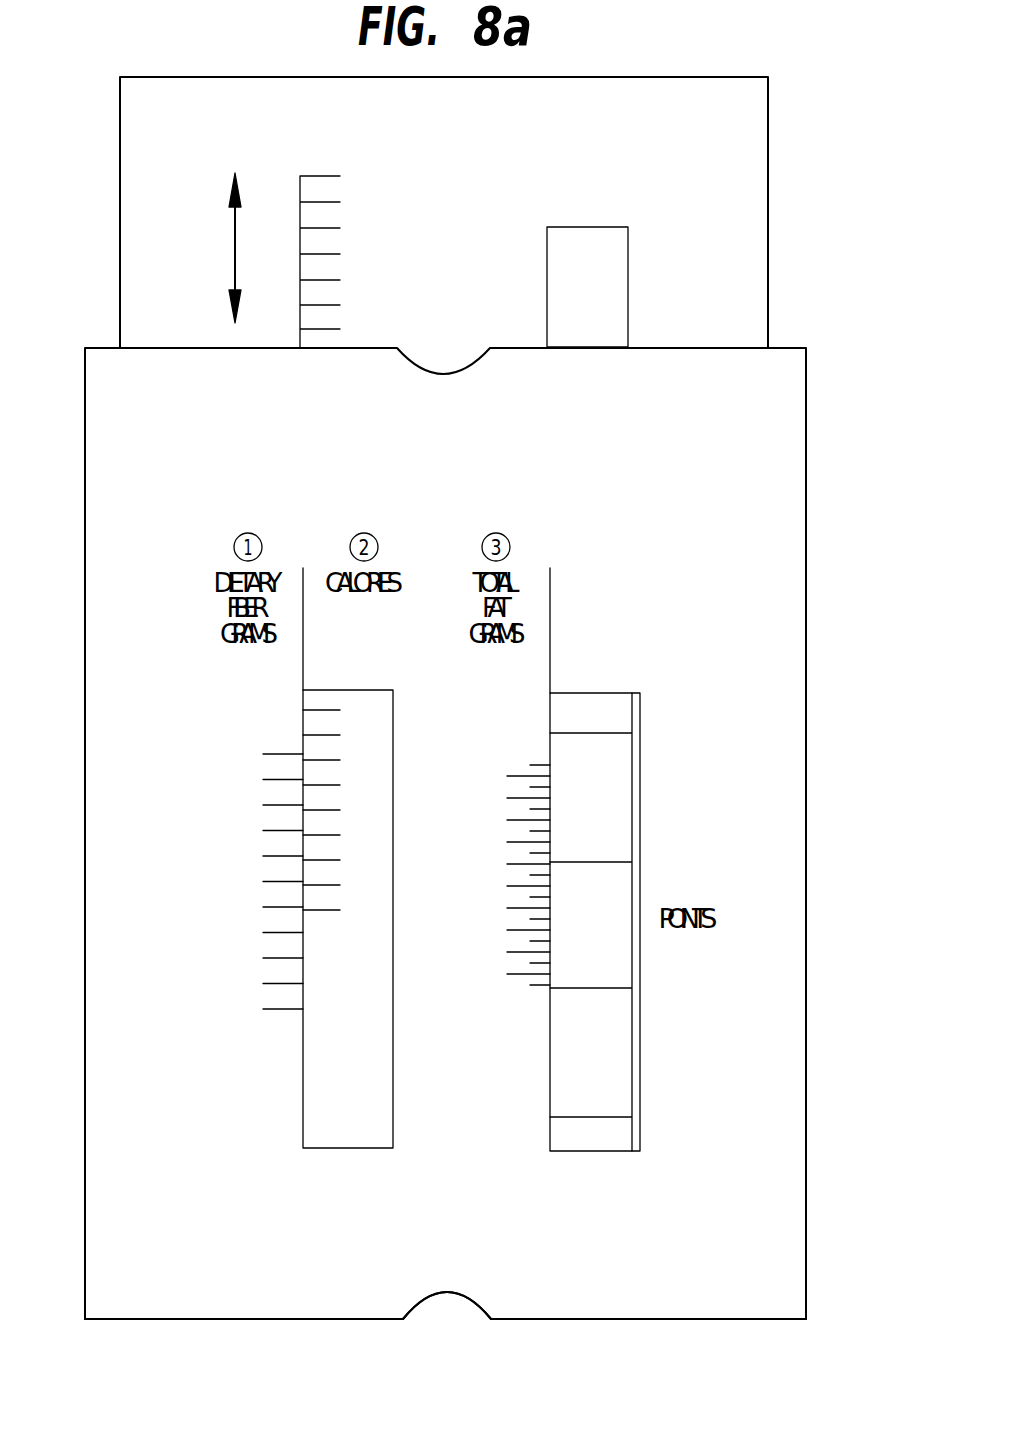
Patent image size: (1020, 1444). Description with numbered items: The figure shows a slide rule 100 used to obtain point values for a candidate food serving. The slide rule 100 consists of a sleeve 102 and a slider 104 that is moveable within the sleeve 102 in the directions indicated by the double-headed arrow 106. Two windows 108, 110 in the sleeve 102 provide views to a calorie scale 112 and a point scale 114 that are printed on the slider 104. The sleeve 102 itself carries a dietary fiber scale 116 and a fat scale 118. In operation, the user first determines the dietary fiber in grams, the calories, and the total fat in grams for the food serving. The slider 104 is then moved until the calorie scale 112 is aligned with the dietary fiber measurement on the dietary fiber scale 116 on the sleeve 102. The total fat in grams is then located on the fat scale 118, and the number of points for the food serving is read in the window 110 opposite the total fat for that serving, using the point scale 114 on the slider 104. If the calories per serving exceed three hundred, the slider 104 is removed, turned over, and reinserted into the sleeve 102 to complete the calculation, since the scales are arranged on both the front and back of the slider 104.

The slide rule 100 is at (793, 346).
The sleeve 102 is at (469, 1222).
The slider 104 is at (464, 205).
The double-headed arrow 106 is at (234, 248).
The window 108 is at (337, 1148).
The window 110 is at (593, 1151).
The calorie scale 112 is at (316, 176).
The point scale 114 is at (607, 227).
The dietary fiber scale 116 is at (273, 740).
The fat scale 118 is at (511, 762).